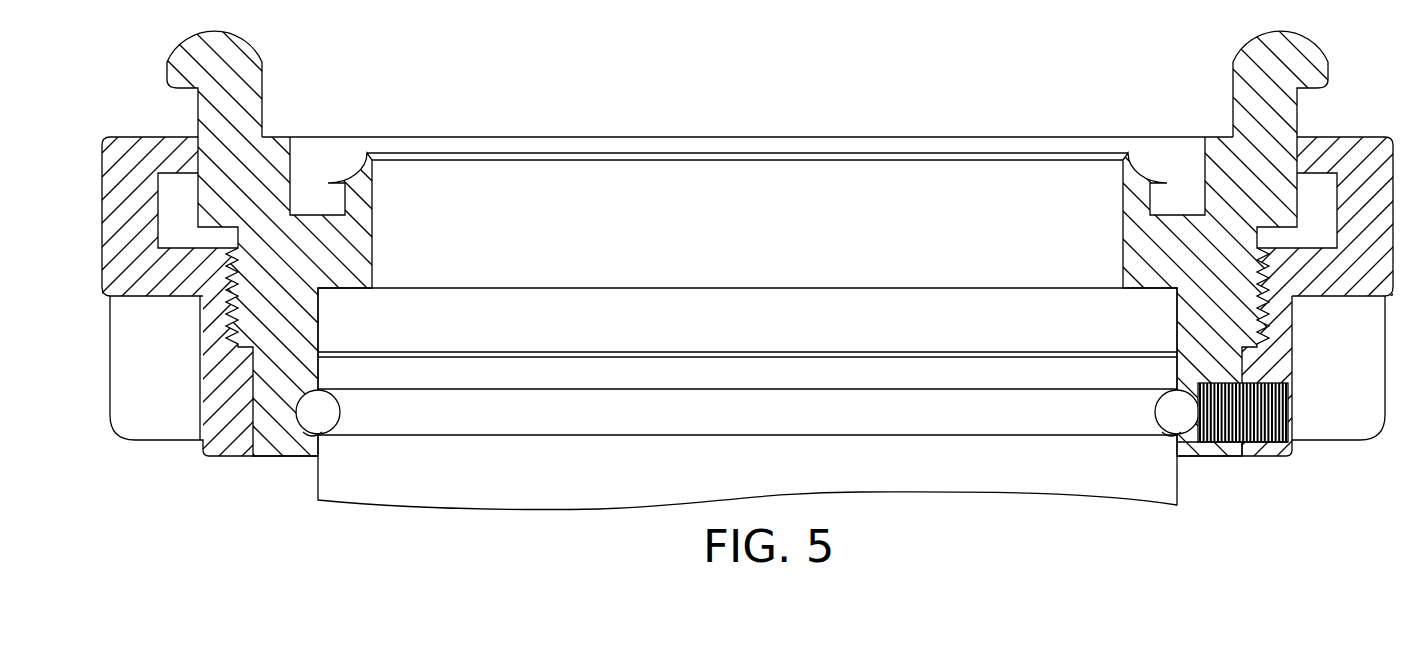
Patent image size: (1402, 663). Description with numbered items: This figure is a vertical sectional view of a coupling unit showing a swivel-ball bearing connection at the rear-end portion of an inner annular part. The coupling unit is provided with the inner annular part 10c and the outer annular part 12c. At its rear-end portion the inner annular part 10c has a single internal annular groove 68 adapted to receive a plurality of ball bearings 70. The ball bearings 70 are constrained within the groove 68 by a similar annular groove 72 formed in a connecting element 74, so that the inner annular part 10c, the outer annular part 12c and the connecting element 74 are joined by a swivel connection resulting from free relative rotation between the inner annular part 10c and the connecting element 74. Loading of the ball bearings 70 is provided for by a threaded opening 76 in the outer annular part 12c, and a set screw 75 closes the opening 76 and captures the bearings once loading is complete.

The inner annular part 10c is at (384, 178).
The outer annular part 12c is at (200, 453).
The internal annular groove 68 is at (308, 426).
The ball bearings 70 is at (319, 403).
The annular groove 72 is at (1165, 432).
The connecting element 74 is at (1018, 380).
The set screw 75 is at (1241, 455).
The threaded opening 76 is at (1288, 402).